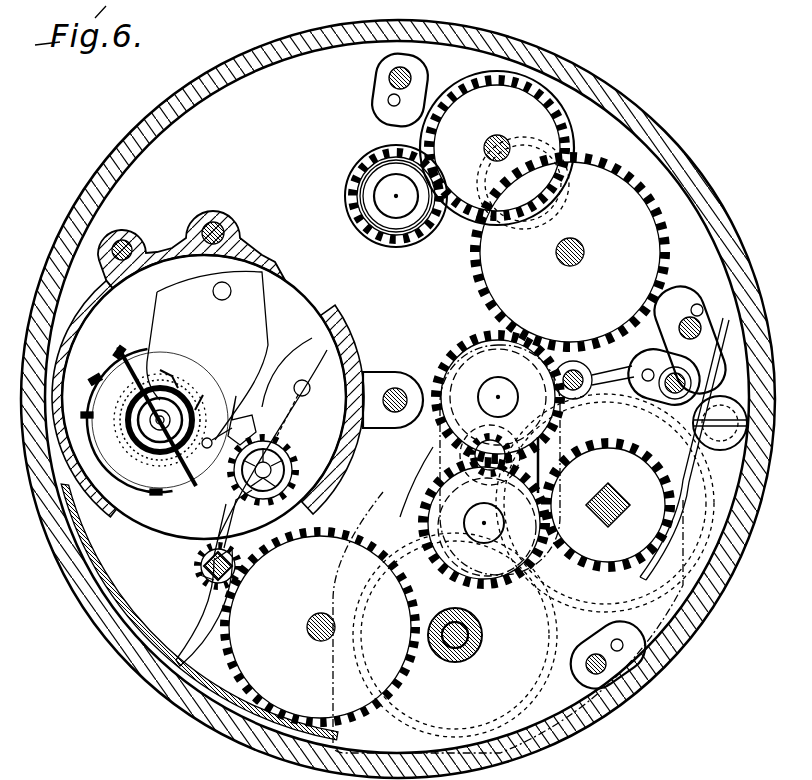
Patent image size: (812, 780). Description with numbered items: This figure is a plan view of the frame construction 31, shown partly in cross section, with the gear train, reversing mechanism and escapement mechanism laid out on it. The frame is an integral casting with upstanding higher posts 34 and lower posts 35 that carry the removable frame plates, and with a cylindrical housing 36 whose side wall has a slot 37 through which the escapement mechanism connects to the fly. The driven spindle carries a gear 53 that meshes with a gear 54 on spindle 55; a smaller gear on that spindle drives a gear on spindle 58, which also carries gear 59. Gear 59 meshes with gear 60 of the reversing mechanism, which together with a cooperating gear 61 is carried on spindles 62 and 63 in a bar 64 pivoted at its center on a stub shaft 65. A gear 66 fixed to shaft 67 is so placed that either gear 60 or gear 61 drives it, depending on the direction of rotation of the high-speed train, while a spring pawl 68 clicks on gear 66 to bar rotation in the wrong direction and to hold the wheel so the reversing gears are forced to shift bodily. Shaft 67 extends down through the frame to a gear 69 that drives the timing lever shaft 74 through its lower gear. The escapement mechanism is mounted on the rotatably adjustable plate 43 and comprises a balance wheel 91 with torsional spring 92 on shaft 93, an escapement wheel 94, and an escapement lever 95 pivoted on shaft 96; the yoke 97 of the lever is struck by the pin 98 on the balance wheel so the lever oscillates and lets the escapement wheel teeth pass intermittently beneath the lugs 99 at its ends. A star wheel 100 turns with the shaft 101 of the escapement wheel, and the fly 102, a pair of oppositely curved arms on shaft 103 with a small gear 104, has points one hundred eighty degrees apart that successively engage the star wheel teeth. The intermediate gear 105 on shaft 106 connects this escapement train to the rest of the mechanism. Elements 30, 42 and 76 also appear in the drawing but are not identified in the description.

The balance cock bracket 30 is at (152, 245).
The frame construction 31 is at (160, 140).
The higher posts 34 is at (655, 362).
The lower posts 35 is at (385, 92).
The cylindrical housing 36 is at (333, 302).
The slot 37 is at (137, 520).
The plate rim 42 is at (110, 515).
The plate 43 is at (160, 523).
The gear 53 is at (360, 170).
The gear 54 is at (545, 115).
The spindle 55 is at (512, 148).
The spindle 58 is at (578, 240).
The gear 59 is at (645, 240).
The gear 60 is at (447, 355).
The cooperating gear 61 is at (492, 572).
The spindle 62 is at (490, 380).
The spindle 63 is at (470, 520).
The bar 64 is at (445, 366).
The stub shaft 65 is at (445, 440).
The gear 66 is at (588, 598).
The shaft 67 is at (608, 490).
The spring pawl 68 is at (725, 515).
The gear 69 is at (680, 575).
The timing lever shaft 74 is at (484, 638).
The hub 76 is at (388, 200).
The balance wheel 91 is at (100, 462).
The torsional spring 92 is at (162, 480).
The shaft 93 is at (178, 388).
The escapement wheel 94 is at (330, 462).
The escapement lever 95 is at (247, 425).
The shaft 96 is at (236, 396).
The yoke 97 is at (203, 395).
The pin 98 is at (160, 436).
The lugs 99 is at (268, 445).
The star wheel 100 is at (309, 387).
The shaft 101 is at (323, 480).
The fly 102 is at (207, 600).
The shaft 103 is at (200, 568).
The small gear 104 is at (200, 575).
The gear 105 is at (258, 670).
The shaft 106 is at (305, 627).